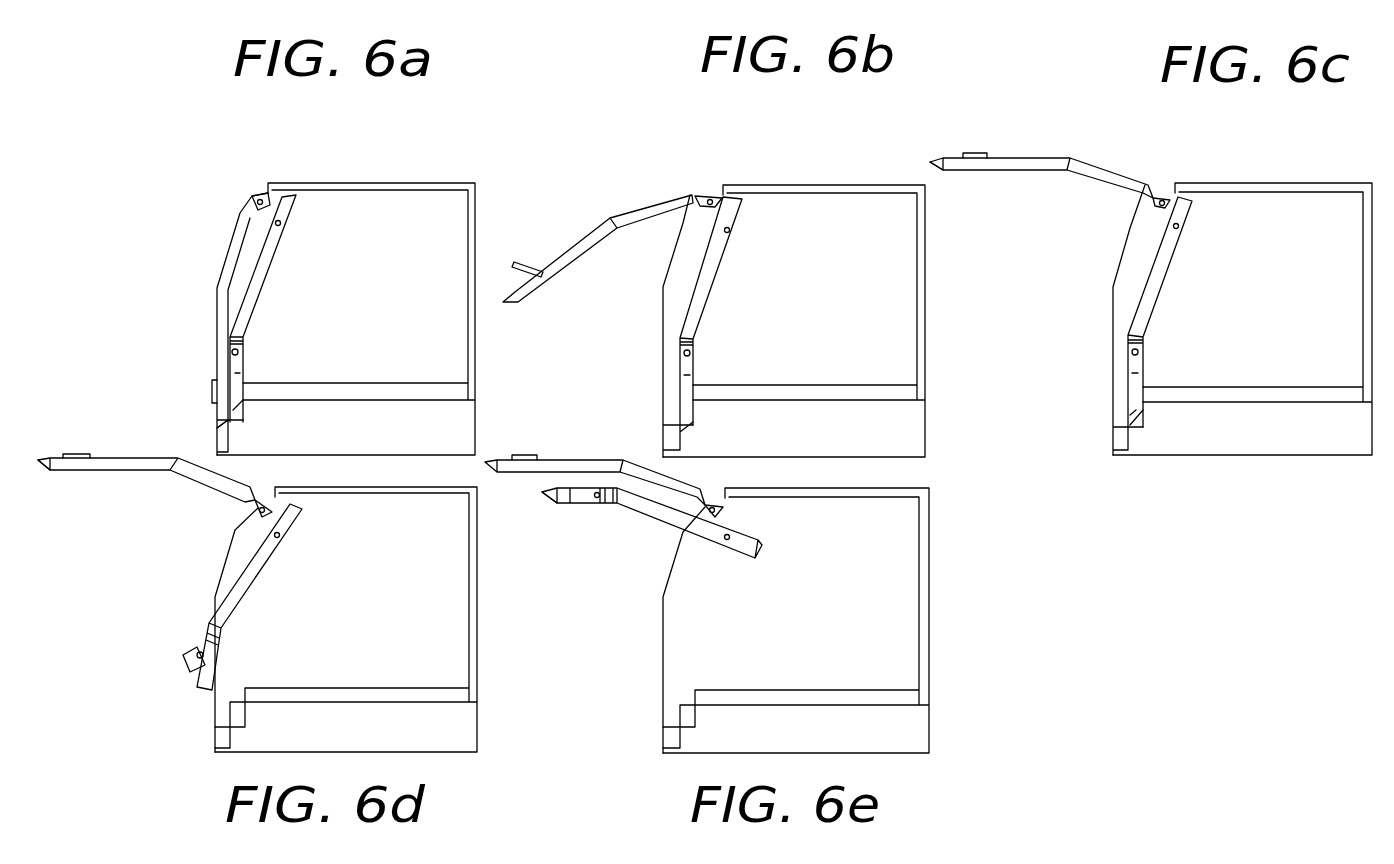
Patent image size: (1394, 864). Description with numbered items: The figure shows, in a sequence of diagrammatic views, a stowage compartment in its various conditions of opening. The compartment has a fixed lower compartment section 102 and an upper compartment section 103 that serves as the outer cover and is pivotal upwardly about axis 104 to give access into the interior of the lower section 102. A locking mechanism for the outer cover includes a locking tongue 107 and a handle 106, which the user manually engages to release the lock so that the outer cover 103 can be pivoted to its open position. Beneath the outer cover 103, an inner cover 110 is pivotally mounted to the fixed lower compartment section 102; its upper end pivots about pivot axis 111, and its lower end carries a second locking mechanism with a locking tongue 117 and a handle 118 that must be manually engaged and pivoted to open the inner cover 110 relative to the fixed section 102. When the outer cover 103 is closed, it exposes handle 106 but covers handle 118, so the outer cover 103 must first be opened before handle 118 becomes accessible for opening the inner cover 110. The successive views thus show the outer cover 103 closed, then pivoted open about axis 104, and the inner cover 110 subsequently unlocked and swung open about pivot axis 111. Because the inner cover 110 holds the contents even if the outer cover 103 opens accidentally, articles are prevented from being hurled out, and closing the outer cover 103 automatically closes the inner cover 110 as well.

In FIG. 6A, the lower compartment section 102 is at (433, 220).
In FIG. 6B, the lower compartment section 102 is at (873, 302).
In FIG. 6C, the lower compartment section 102 is at (1285, 213).
In FIG. 6D, the lower compartment section 102 is at (437, 630).
In FIG. 6E, the lower compartment section 102 is at (890, 620).
In FIG. 6A, the upper compartment section 103 is at (230, 247).
In FIG. 6B, the upper compartment section 103 is at (643, 205).
In FIG. 6C, the upper compartment section 103 is at (1043, 163).
In FIG. 6D, the upper compartment section 103 is at (150, 468).
In FIG. 6E, the upper compartment section 103 is at (518, 465).
In FIG. 6A, the axis 104 is at (260, 198).
In FIG. 6B, the axis 104 is at (708, 200).
In FIG. 6C, the axis 104 is at (1165, 203).
In FIG. 6D, the axis 104 is at (272, 512).
In FIG. 6E, the axis 104 is at (720, 510).
In FIG. 6A, the handle 106 is at (212, 387).
In FIG. 6B, the handle 106 is at (532, 258).
In FIG. 6C, the handle 106 is at (977, 152).
In FIG. 6D, the handle 106 is at (77, 453).
In FIG. 6E, the handle 106 is at (524, 457).
In FIG. 6A, the locking tongue 107 is at (217, 430).
In FIG. 6C, the locking tongue 107 is at (932, 158).
In FIG. 6D, the locking tongue 107 is at (40, 460).
In FIG. 6A, the inner cover 110 is at (262, 278).
In FIG. 6B, the inner cover 110 is at (708, 283).
In FIG. 6C, the inner cover 110 is at (1155, 282).
In FIG. 6D, the inner cover 110 is at (245, 585).
In FIG. 6E, the inner cover 110 is at (650, 510).
In FIG. 6A, the pivot axis 111 is at (290, 218).
In FIG. 6B, the pivot axis 111 is at (730, 230).
In FIG. 6C, the pivot axis 111 is at (1180, 226).
In FIG. 6D, the pivot axis 111 is at (280, 537).
In FIG. 6E, the pivot axis 111 is at (727, 537).
In FIG. 6C, the locking tongue 117 is at (1143, 417).
In FIG. 6E, the locking tongue 117 is at (547, 500).
In FIG. 6C, the handle 118 is at (1132, 377).
In FIG. 6D, the handle 118 is at (197, 653).
In FIG. 6E, the handle 118 is at (587, 502).